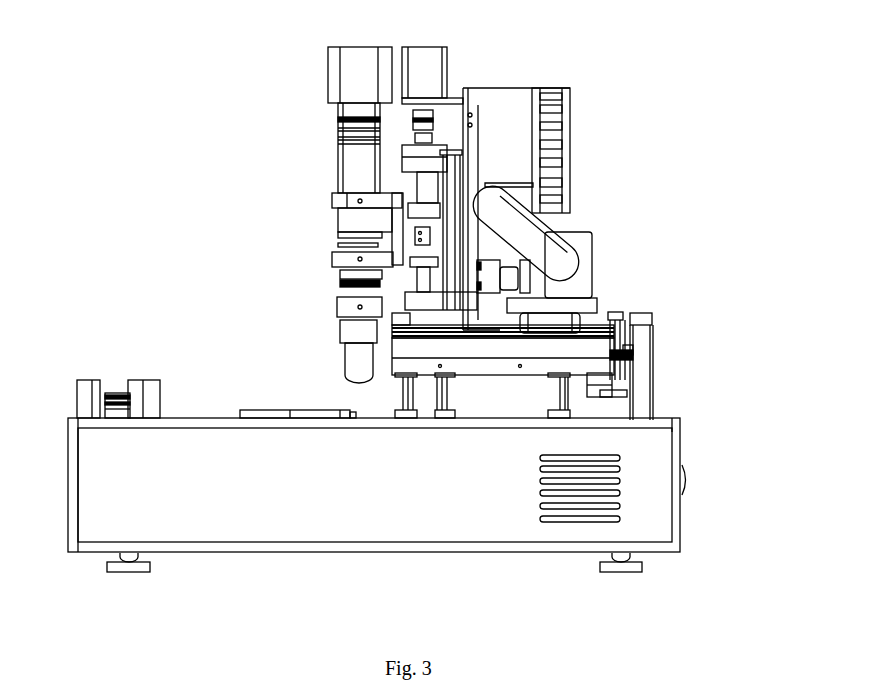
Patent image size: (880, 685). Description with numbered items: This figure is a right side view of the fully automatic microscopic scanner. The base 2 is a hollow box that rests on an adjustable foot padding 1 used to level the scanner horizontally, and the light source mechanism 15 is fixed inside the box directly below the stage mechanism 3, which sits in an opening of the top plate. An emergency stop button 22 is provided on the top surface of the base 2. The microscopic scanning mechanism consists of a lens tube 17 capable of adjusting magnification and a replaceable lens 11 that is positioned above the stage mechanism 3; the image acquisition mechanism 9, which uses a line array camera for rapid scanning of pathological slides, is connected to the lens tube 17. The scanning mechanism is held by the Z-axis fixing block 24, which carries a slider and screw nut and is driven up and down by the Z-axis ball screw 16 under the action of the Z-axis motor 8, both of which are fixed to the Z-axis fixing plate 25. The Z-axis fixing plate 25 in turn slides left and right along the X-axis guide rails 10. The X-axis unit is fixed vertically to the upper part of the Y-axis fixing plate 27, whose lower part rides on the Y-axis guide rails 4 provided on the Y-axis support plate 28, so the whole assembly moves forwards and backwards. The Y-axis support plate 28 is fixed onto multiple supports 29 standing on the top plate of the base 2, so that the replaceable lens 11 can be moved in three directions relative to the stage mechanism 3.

The adjustable foot padding 1 is at (623, 570).
The base 2 is at (658, 470).
The stage mechanism 3 is at (297, 408).
The Y-axis guide rails 4 is at (578, 298).
The Z-axis motor 8 is at (432, 57).
The image acquisition mechanism 9 is at (352, 82).
The X-axis guide rails 10 is at (493, 280).
The replaceable lens 11 is at (350, 368).
The light source mechanism 15 is at (572, 150).
The Z-axis ball screw 16 is at (433, 197).
The lens tube 17 is at (345, 180).
The emergency stop button 22 is at (117, 393).
The Z-axis fixing block 24 is at (453, 240).
The Z-axis fixing plate 25 is at (463, 110).
The Y-axis fixing plate 27 is at (550, 322).
The Y-axis support plate 28 is at (628, 352).
The supports 29 is at (580, 398).